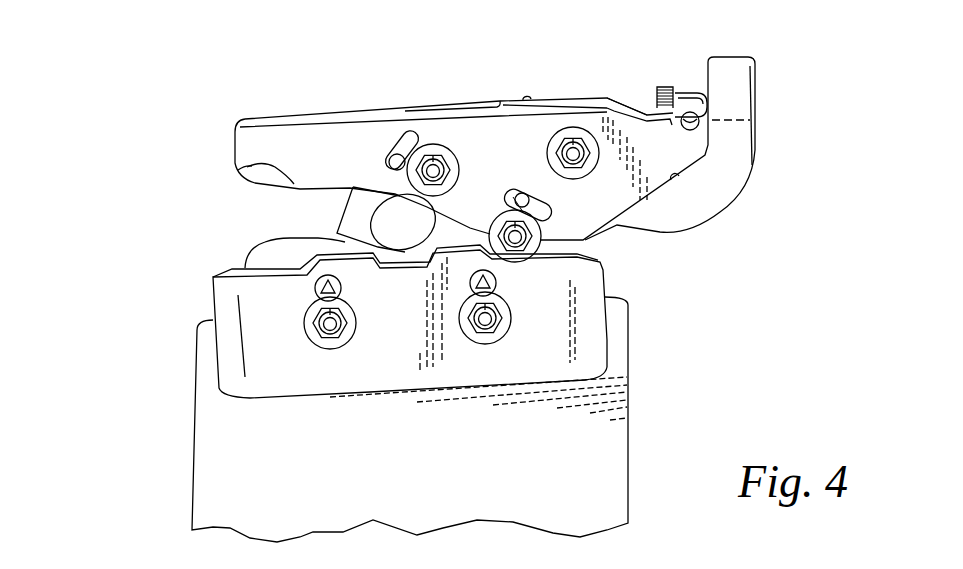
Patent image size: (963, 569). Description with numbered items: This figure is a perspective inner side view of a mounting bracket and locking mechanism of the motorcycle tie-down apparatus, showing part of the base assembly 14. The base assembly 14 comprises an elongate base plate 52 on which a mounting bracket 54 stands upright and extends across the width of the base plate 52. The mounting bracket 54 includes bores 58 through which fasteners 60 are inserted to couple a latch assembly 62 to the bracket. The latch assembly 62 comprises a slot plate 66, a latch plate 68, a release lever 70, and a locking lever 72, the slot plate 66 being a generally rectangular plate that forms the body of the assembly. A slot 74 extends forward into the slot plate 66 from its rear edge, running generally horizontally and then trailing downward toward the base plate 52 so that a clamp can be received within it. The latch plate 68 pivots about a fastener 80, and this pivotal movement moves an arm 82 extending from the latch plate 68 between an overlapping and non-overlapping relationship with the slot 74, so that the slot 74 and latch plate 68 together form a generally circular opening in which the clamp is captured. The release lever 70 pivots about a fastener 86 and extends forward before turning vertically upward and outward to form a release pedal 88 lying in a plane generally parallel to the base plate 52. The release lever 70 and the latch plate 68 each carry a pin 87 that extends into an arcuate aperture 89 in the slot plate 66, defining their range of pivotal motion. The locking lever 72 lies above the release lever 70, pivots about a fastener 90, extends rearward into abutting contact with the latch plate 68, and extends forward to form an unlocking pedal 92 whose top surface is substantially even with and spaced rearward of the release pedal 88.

The base assembly 14 is at (672, 351).
The base plate 52 is at (322, 490).
The mounting bracket 54 is at (587, 295).
The bores 58 is at (497, 285).
The fasteners 60 is at (497, 327).
The latch assembly 62 is at (230, 108).
The slot plate 66 is at (315, 118).
The latch plate 68 is at (485, 102).
The release lever 70 is at (755, 167).
The locking lever 72 is at (590, 98).
The slot 74 is at (238, 167).
The fastener 80 is at (437, 158).
The arm 82 is at (330, 240).
The fastener 86 is at (533, 240).
The pin 87 is at (387, 167).
The release pedal 88 is at (743, 77).
The arcuate apertures 89 is at (393, 135).
The fastener 90 is at (570, 147).
The unlocking pedal 92 is at (668, 87).